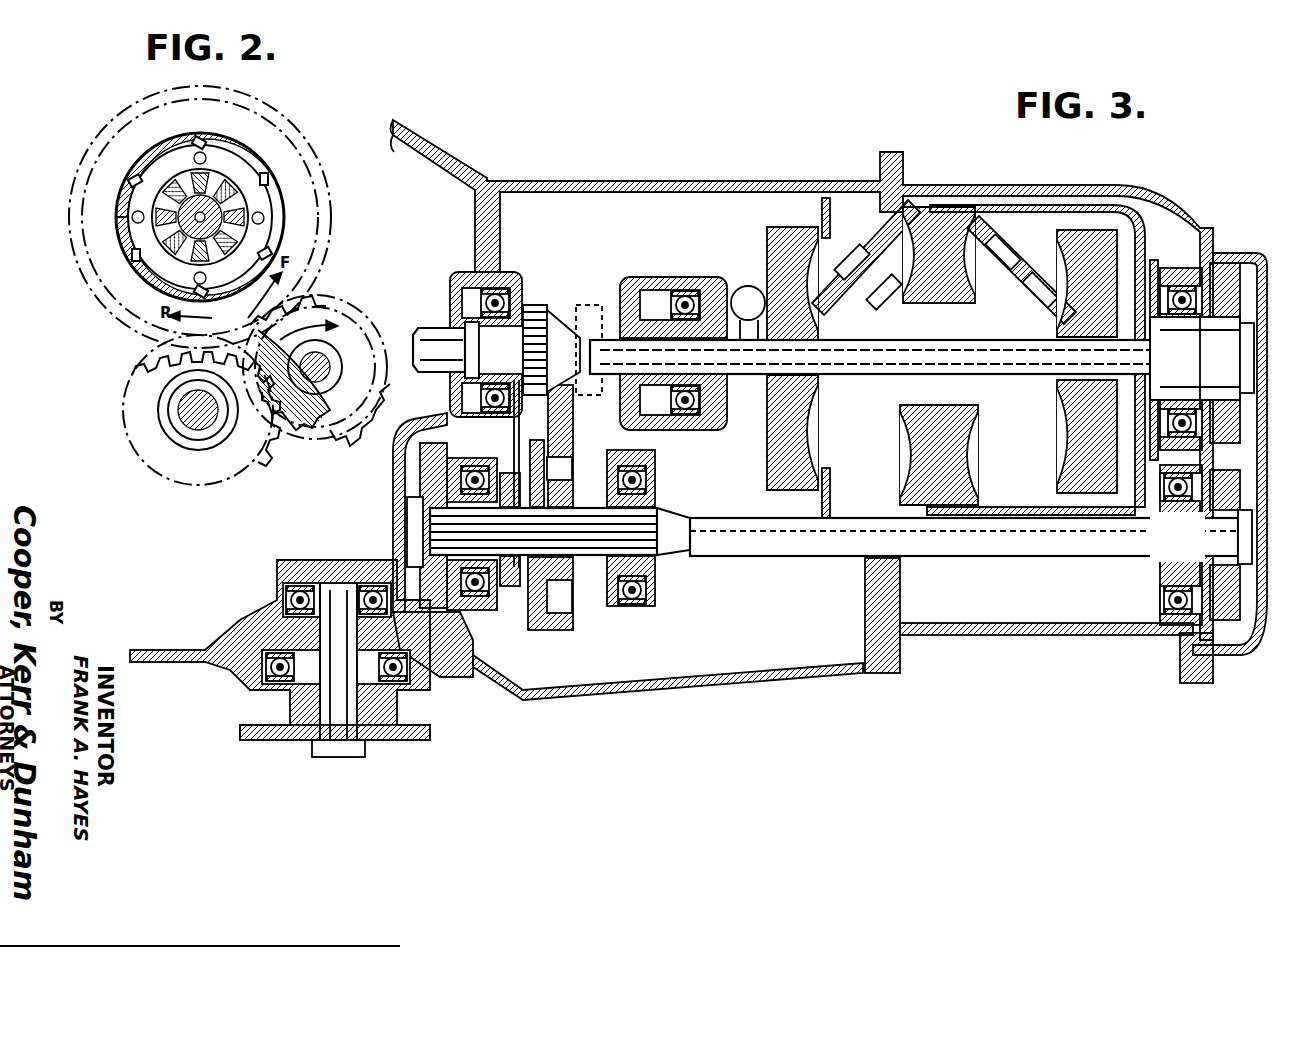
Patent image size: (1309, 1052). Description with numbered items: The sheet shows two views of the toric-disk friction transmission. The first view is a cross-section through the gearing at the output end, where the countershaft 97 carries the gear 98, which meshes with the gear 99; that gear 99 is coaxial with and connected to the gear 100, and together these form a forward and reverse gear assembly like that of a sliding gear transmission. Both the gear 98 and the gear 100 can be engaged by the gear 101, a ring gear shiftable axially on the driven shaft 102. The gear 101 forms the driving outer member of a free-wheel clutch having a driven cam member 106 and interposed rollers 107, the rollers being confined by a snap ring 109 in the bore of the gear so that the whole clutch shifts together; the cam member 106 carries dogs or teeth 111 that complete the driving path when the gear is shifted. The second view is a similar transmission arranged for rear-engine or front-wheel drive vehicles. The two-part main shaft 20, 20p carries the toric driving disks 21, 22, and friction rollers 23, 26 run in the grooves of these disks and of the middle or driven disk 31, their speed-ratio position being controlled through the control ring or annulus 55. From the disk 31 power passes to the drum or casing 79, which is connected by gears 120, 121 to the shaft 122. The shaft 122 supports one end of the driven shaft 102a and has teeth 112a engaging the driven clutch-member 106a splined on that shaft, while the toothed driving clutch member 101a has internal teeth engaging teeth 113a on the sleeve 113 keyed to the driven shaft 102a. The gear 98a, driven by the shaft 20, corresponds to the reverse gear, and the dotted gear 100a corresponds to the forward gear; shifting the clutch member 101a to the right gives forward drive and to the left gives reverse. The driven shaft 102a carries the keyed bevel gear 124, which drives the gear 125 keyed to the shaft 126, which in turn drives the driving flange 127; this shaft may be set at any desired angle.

In FIG. 2, the gear 101 is at (330, 262).
In FIG. 2, the snap ring 109 is at (205, 137).
In FIG. 2, the rollers 107 is at (240, 152).
In FIG. 2, the driven cam member 106 is at (240, 192).
In FIG. 2, the dogs or teeth 111 is at (255, 200).
In FIG. 2, the driven shaft 102 is at (195, 214).
In FIG. 2, the gear 98 is at (250, 470).
In FIG. 2, the countershaft 97 is at (200, 430).
In FIG. 2, the gear 99 is at (292, 395).
In FIG. 2, the gear 100 is at (352, 415).
In FIG. 3, the gear 120 is at (1228, 272).
In FIG. 3, the bevel gear 124 is at (395, 472).
In FIG. 3, the gear 125 is at (248, 612).
In FIG. 3, the shaft 126 is at (342, 760).
In FIG. 3, the driving flange 127 is at (432, 733).
In FIG. 3, the sleeve 113 is at (512, 470).
In FIG. 3, the teeth 112a is at (605, 605).
In FIG. 3, the teeth 113a is at (505, 606).
In FIG. 3, the driving clutch member 101a is at (573, 410).
In FIG. 3, the driven clutch-member 106a is at (572, 470).
In FIG. 3, the driven shaft 102a is at (640, 530).
In FIG. 3, the shaft 122 is at (965, 560).
In FIG. 3, the gear 121 is at (1205, 462).
In FIG. 3, the driving or main shaft 20 is at (430, 338).
In FIG. 3, the gear 98a is at (537, 305).
In FIG. 3, the gear 100a is at (590, 305).
In FIG. 3, the driving or main shaft part 20p is at (870, 380).
In FIG. 3, the toric driving disk 21 is at (803, 248).
In FIG. 3, the control ring or annulus 55 is at (830, 208).
In FIG. 3, the friction roller 23 is at (848, 305).
In FIG. 3, the middle or driven disk 31 is at (952, 215).
In FIG. 3, the drum or casing 79 is at (1037, 206).
In FIG. 3, the friction roller 26 is at (1010, 258).
In FIG. 3, the toric driving disk 22 is at (1085, 250).